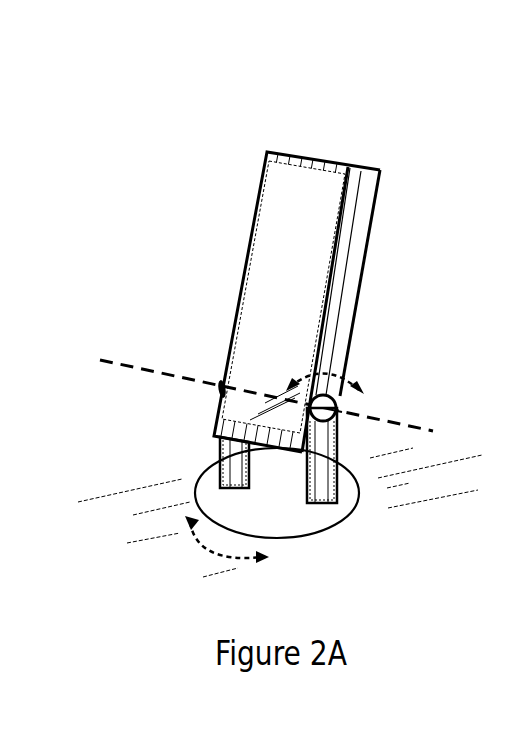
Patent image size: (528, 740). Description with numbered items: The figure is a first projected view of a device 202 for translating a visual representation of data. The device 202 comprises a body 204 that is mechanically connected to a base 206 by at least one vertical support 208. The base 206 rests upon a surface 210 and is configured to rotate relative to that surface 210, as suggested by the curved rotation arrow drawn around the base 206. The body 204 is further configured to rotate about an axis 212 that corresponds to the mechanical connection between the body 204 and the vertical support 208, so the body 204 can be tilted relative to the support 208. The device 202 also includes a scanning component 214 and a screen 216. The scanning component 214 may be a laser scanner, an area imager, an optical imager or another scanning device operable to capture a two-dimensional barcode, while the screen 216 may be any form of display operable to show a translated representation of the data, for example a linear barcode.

The device 202 is at (381, 82).
The body 204 is at (266, 151).
The base 206 is at (297, 542).
The vertical support 208 is at (323, 503).
The surface 210 is at (119, 506).
The axis 212 is at (383, 417).
The scanning component 214 is at (270, 302).
The screen 216 is at (374, 288).